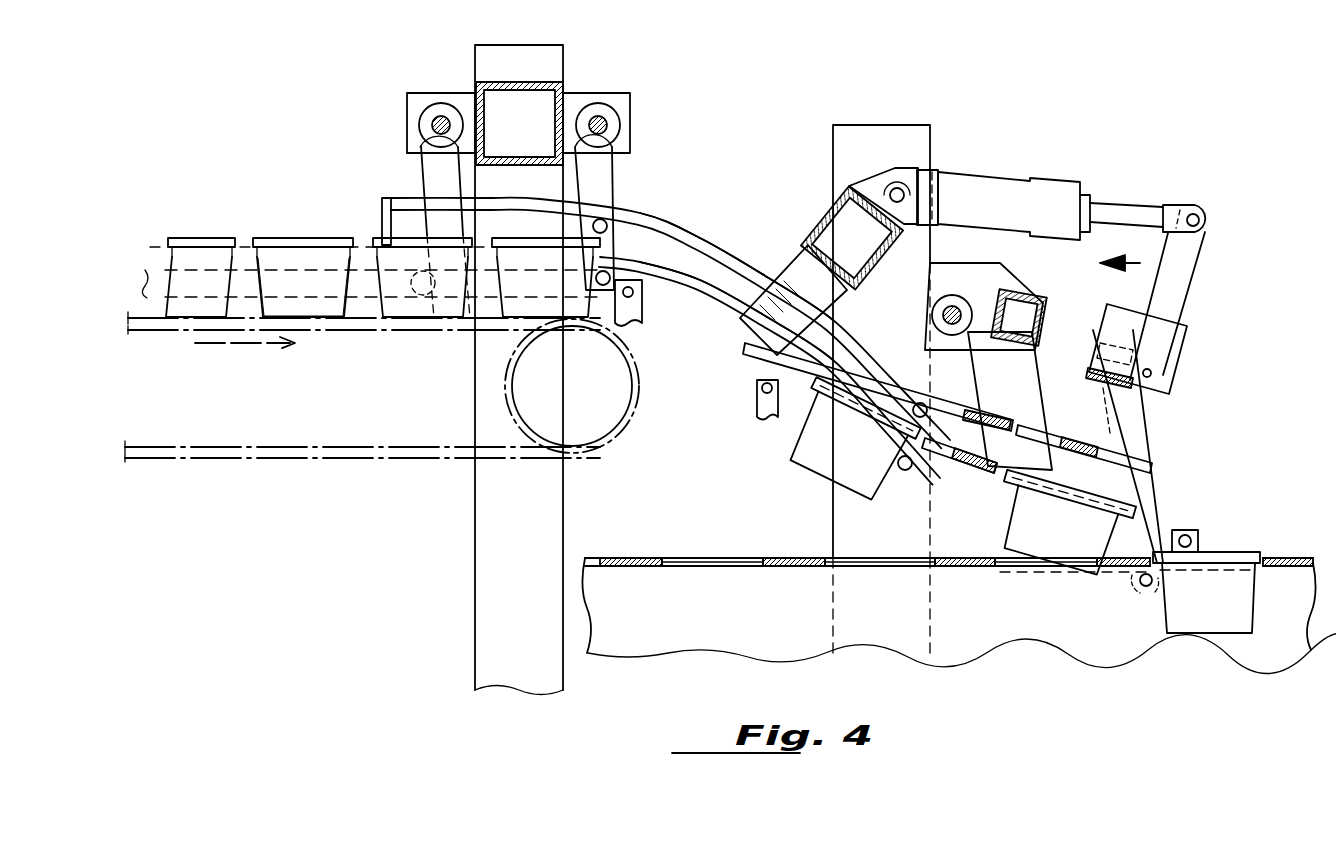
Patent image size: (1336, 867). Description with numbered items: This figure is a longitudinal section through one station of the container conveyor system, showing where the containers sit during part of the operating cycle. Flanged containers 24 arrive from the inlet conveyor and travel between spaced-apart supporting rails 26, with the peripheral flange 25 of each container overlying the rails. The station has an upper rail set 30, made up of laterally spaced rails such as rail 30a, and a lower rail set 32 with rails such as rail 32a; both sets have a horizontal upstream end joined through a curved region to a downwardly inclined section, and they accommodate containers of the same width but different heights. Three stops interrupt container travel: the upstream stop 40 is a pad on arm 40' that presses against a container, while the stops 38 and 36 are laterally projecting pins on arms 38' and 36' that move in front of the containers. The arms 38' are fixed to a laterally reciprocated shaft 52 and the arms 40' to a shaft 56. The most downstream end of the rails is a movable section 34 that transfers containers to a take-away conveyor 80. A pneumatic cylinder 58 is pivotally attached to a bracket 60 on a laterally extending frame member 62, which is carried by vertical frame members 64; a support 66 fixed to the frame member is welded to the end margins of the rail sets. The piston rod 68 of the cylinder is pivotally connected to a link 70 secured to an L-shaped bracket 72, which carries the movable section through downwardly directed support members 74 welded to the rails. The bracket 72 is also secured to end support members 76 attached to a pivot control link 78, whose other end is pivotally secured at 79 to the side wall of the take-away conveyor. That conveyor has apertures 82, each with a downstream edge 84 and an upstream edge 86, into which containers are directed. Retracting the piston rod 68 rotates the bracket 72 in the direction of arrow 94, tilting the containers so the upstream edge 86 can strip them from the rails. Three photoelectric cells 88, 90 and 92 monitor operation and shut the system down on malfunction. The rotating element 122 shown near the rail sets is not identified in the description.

The flanged container 24 is at (345, 320).
The peripheral flange 25 is at (205, 240).
The supporting rail 26 is at (242, 280).
The upper rail set 30 is at (670, 207).
The upper rail 30a is at (718, 245).
The lower rail set 32 is at (689, 314).
The lower rail 32a is at (738, 322).
The movable section 34 is at (1056, 418).
The stop 36 is at (909, 465).
The arm 36' is at (959, 366).
The stop 38 is at (629, 252).
The arm 38' is at (635, 205).
The stop 40 is at (426, 324).
The arm 40' is at (405, 223).
The laterally extending shaft 52 is at (608, 124).
The laterally extending shaft 56 is at (428, 122).
The pneumatic cylinder 58 is at (985, 192).
The bracket 60 is at (872, 190).
The laterally extending frame member 62 is at (822, 222).
The vertical frame member 64 is at (915, 138).
The support 66 is at (800, 290).
The piston rod 68 is at (1140, 206).
The link 70 is at (1182, 285).
The L-shaped bracket 72 is at (1152, 377).
The support member 74 is at (1110, 392).
The end support member 76 is at (1182, 338).
The pivot control link 78 is at (1135, 445).
The pivot 79 is at (1140, 590).
The take-away conveyor 80 is at (630, 548).
The aperture 82 is at (712, 558).
The downstream edge 84 is at (757, 568).
The upstream edge 86 is at (838, 558).
The photoelectric cell 88 is at (633, 292).
The photoelectric cell 90 is at (762, 407).
The photoelectric cell 92 is at (1198, 536).
The arrow 94 is at (1140, 263).
The drive wheel 122 is at (640, 386).